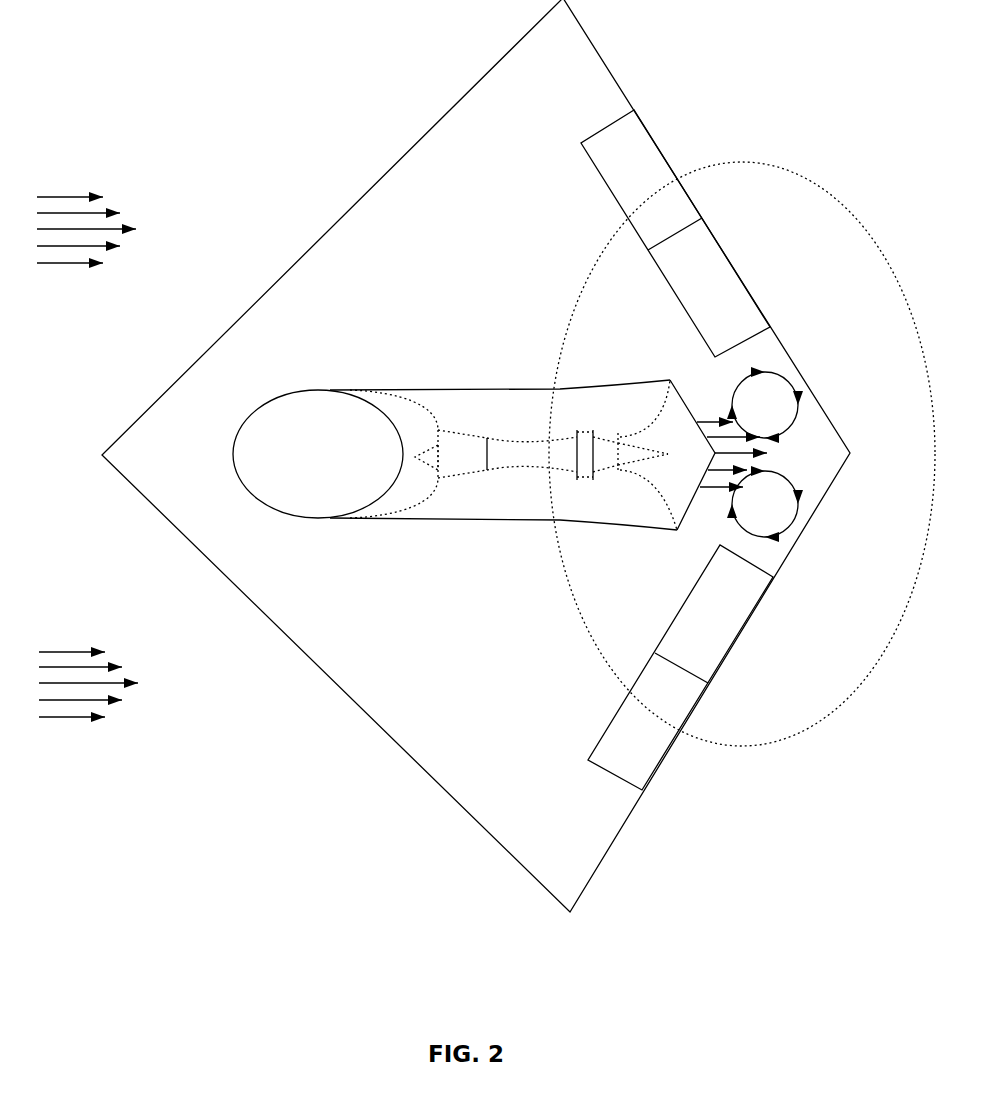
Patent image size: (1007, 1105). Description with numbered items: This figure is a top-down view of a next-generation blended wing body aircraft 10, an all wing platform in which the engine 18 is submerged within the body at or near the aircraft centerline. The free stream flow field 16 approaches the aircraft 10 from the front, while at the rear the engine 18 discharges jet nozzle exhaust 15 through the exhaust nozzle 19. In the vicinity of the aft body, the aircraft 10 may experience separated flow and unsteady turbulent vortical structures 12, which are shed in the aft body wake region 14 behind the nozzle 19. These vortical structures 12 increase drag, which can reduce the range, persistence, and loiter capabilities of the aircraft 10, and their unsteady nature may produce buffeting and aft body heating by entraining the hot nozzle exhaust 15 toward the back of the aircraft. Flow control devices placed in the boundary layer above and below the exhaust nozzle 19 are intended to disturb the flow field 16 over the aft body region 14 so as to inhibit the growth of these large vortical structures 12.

The aircraft 10 is at (693, 150).
The vortical structures 12 is at (788, 370).
The aft body wake region 14 is at (848, 212).
The jet nozzle exhaust 15 is at (727, 488).
The flow field 16 is at (124, 226).
The engine 18 is at (487, 438).
The exhaust nozzle 19 is at (670, 380).